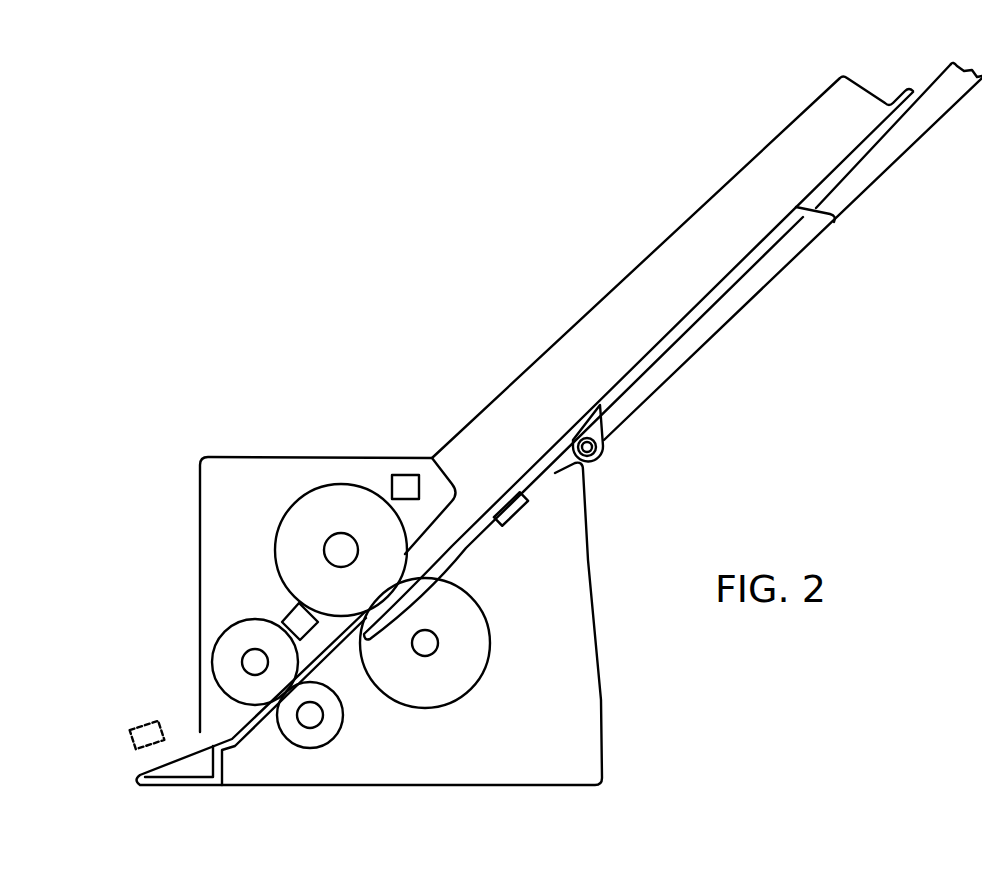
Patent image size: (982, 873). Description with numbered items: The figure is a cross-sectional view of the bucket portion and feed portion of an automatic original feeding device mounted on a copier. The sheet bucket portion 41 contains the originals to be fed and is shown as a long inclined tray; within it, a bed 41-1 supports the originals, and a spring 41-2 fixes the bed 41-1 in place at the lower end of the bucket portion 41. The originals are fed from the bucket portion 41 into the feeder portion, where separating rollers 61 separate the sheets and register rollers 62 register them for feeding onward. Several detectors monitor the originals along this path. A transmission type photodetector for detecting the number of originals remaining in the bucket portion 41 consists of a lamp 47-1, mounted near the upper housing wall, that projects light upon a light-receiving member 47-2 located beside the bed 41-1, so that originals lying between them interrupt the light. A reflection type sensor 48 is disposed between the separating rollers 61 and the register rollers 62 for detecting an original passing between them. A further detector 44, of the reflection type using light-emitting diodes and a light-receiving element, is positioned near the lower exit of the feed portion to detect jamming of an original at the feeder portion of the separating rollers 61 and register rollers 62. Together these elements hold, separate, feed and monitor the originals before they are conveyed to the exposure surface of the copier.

The sheet bucket portion 41 is at (711, 334).
The bed 41-1 is at (647, 362).
The spring 41-2 is at (602, 445).
The detector 44 is at (140, 727).
The lamp 47-1 is at (405, 475).
The light-receiving member 47-2 is at (513, 525).
The reflection type sensor 48 is at (290, 611).
The separating rollers 61 is at (297, 503).
The register rollers 62 is at (213, 643).